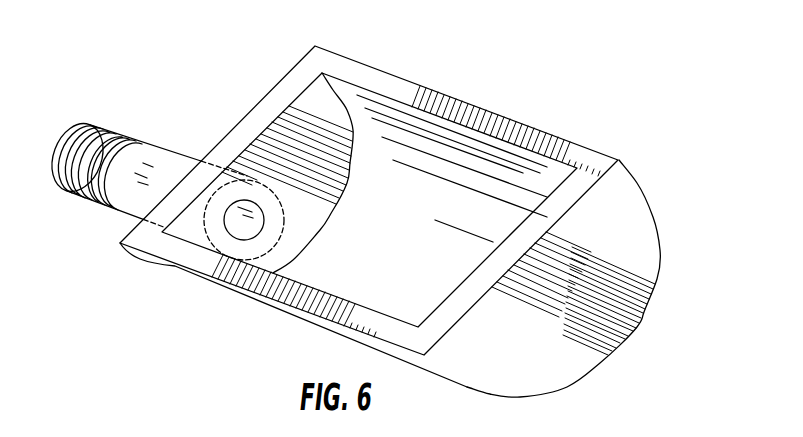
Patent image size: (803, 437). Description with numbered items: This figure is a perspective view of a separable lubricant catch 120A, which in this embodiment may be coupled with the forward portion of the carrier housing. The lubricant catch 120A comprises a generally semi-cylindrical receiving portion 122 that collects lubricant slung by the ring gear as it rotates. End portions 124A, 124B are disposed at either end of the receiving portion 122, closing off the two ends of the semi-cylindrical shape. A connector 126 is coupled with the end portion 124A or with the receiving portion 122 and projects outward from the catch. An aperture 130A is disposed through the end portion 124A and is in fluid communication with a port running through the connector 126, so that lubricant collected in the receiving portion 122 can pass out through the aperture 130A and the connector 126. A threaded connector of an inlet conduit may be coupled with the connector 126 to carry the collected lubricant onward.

The lubricant catch 120A is at (542, 102).
The receiving portion 122 is at (421, 140).
The end portion 124A is at (320, 115).
The end portion 124B is at (610, 237).
The connector 126 is at (105, 145).
The aperture 130A is at (240, 227).